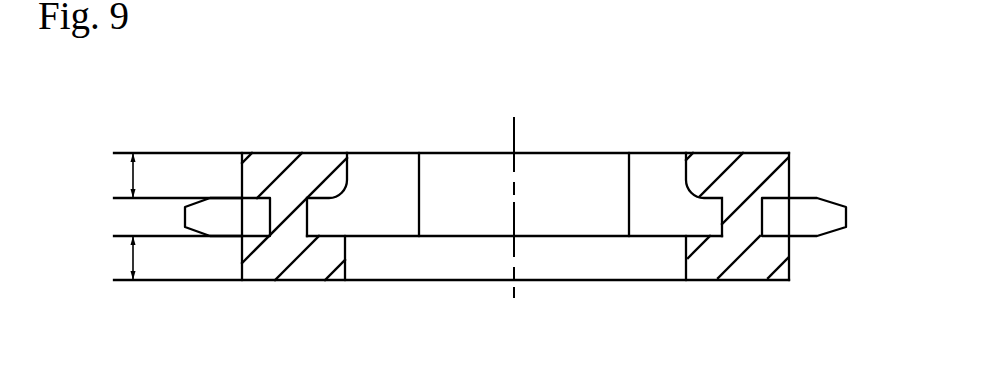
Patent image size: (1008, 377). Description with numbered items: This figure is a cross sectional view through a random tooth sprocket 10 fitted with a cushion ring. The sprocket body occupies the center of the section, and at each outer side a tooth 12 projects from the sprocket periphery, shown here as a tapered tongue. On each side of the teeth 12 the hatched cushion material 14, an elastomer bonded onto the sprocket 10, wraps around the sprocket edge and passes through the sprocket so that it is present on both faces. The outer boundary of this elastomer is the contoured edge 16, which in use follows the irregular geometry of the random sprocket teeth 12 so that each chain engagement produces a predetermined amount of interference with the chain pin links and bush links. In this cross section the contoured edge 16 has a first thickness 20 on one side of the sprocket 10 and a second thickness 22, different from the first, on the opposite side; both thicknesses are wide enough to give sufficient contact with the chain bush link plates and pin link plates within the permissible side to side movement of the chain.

The random tooth sprocket 10 is at (366, 206).
The teeth 12 is at (223, 227).
The cushion material 14 is at (284, 189).
The contoured edge 16 is at (240, 172).
The first thickness 20 is at (127, 173).
The second thickness 22 is at (128, 253).